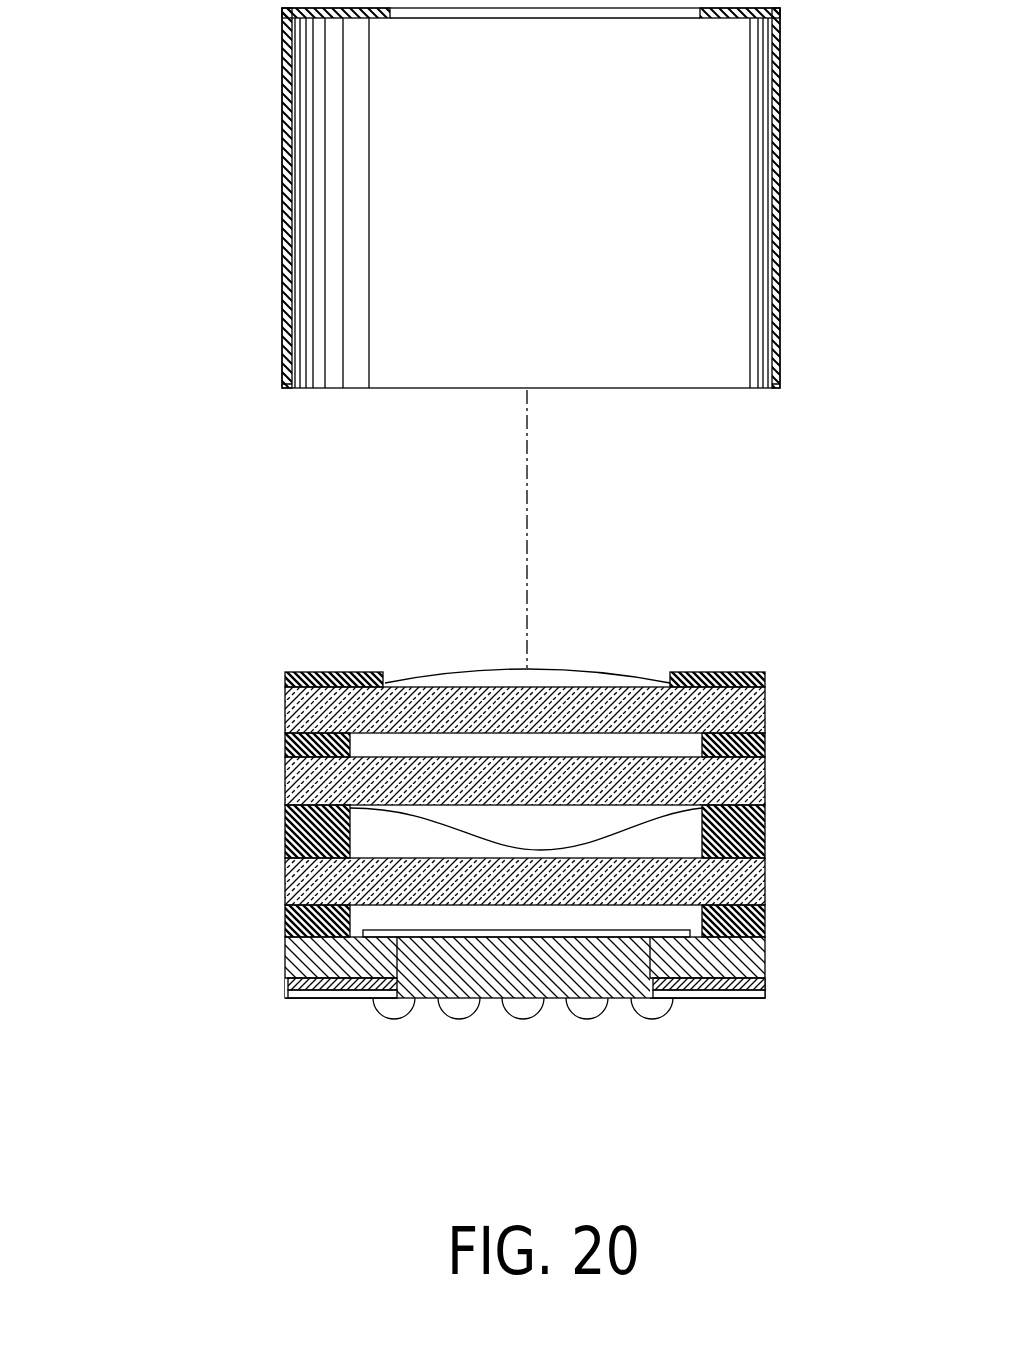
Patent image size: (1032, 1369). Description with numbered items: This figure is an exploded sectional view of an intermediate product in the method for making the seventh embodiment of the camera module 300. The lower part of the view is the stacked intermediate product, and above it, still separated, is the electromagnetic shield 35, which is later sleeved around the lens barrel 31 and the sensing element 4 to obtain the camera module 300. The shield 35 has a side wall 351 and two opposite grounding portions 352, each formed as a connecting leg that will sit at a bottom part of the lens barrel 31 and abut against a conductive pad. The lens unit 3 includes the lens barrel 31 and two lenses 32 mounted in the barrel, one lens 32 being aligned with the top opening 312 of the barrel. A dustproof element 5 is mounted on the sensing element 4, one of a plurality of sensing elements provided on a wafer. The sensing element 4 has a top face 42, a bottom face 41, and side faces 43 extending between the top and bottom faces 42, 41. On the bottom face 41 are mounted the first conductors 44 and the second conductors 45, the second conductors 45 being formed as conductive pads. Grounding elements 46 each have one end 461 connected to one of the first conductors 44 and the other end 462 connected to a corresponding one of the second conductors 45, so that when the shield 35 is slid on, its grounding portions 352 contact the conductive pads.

The camera module 300 is at (467, 198).
The electromagnetic shield 35 is at (527, 198).
The housing side wall 351 is at (776, 160).
The grounding portion 352 is at (282, 368).
The lens unit 3 is at (518, 835).
The top opening 312 is at (383, 676).
The lens 32 is at (550, 678).
The lens barrel 31 is at (766, 838).
The dustproof element 5 is at (462, 880).
The top face 42 is at (766, 917).
The bottom face 41 is at (528, 996).
The sensing element 4 is at (518, 1028).
The side face 43 is at (283, 960).
The first conductor 44 is at (388, 1005).
The second conductor 45 is at (283, 1000).
The grounding element 46 is at (518, 1047).
The one end of grounding element 461 is at (662, 1000).
The other end of grounding element 462 is at (753, 1000).